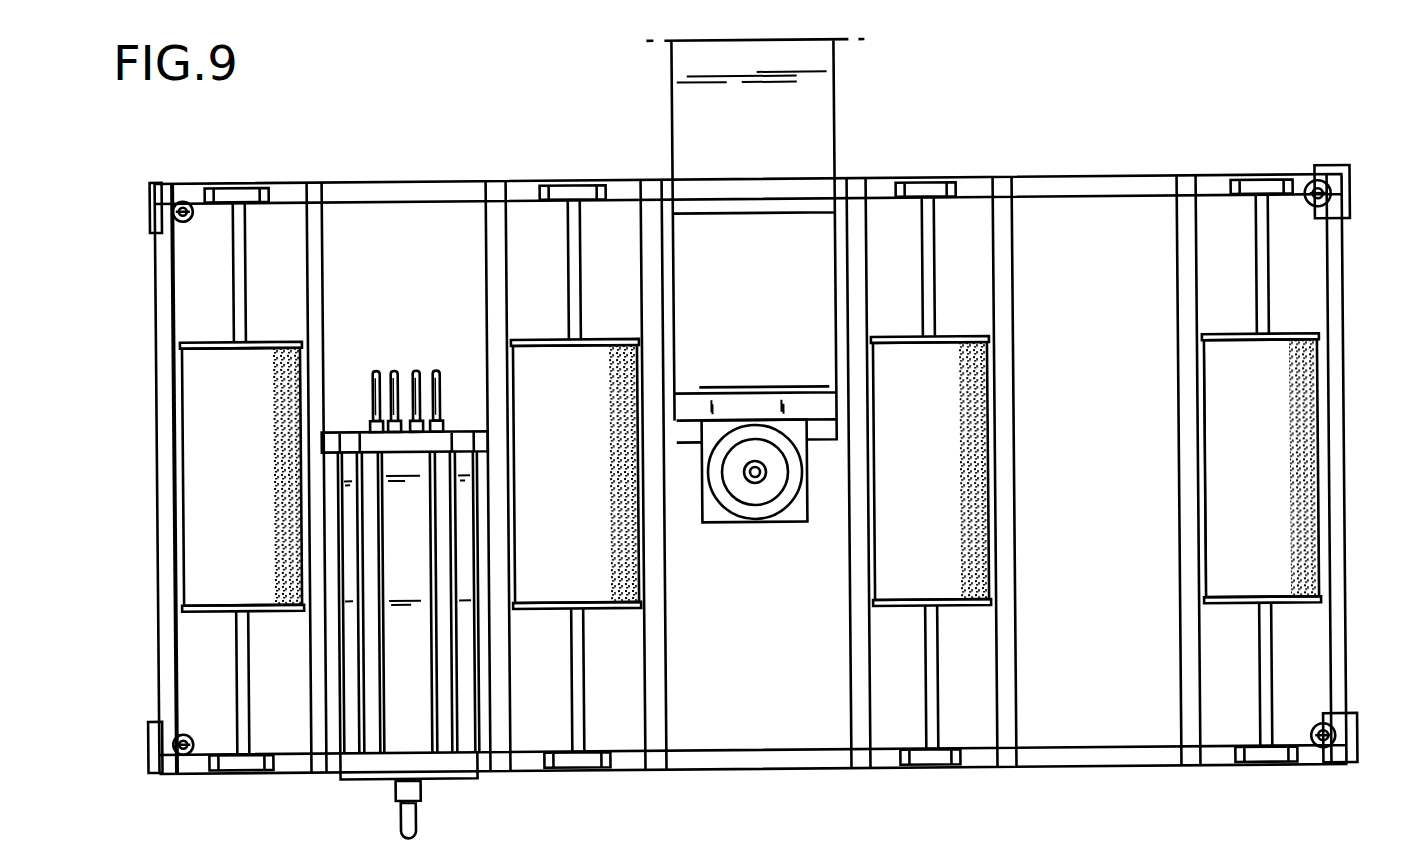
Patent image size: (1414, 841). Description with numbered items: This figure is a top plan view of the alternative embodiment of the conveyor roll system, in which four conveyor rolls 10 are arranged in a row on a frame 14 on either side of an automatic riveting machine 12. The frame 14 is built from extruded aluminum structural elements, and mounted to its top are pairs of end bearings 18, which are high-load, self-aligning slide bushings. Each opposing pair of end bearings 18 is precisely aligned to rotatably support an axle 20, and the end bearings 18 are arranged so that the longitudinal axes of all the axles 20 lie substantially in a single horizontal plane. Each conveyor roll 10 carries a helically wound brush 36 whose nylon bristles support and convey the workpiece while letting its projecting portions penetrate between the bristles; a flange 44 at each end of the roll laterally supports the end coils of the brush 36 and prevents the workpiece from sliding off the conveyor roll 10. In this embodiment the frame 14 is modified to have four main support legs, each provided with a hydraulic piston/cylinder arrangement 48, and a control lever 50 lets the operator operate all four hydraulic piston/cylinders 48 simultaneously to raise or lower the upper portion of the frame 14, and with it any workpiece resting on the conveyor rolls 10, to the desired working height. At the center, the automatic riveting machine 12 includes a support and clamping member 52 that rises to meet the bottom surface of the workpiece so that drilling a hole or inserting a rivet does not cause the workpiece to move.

The conveyor roll 10 is at (747, 473).
The automatic riveting machine 12 is at (776, 347).
The frame 14 is at (420, 183).
The end bearing 18 is at (252, 183).
The axle 20 is at (248, 279).
The brush 36 is at (256, 491).
The flange 44 is at (1214, 330).
The hydraulic piston/cylinder arrangement 48 is at (194, 218).
The control lever 50 is at (414, 836).
The support and clamping member 52 is at (755, 483).